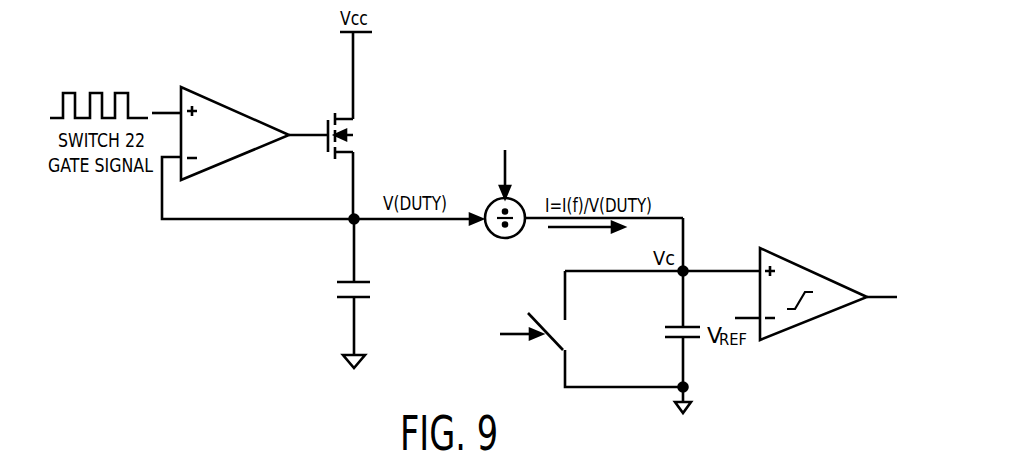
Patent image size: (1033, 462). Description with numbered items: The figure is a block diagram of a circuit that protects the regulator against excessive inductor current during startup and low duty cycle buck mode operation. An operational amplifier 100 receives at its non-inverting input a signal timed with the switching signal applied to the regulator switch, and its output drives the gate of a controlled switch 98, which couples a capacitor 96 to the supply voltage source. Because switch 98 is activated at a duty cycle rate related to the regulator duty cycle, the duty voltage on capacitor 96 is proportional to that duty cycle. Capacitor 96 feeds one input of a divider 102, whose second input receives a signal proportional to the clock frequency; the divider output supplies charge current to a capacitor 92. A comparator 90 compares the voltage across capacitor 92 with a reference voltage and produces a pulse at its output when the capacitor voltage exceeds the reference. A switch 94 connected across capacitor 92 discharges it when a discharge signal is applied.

The operational amplifier 100 is at (237, 111).
The controlled switch 98 is at (355, 122).
The capacitor 96 is at (358, 281).
The divider 102 is at (517, 202).
The switch 94 is at (552, 342).
The capacitor 92 is at (697, 341).
The comparator 90 is at (812, 268).